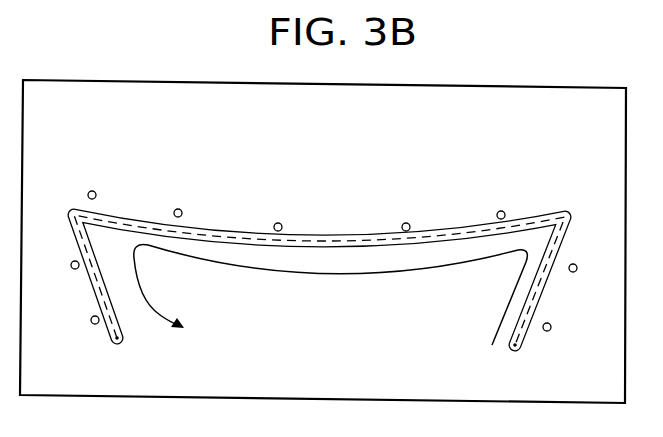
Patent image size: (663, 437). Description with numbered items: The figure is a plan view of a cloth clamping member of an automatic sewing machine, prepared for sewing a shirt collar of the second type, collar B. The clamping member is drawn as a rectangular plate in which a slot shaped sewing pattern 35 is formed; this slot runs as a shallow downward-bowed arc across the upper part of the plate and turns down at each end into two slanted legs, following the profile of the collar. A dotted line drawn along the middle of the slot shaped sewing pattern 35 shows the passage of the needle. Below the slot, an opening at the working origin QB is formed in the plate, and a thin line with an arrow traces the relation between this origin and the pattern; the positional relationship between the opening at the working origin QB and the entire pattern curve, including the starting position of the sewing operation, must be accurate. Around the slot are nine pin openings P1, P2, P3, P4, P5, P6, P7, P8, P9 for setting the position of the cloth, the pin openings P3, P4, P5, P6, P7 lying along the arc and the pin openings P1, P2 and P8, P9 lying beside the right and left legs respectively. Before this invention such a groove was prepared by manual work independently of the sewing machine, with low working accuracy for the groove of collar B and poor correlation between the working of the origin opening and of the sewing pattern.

The collar B is at (558, 87).
The slot shaped sewing pattern 35 is at (552, 298).
The opening at the working origin QB is at (432, 327).
The pin opening P1 is at (548, 331).
The pin opening P2 is at (577, 265).
The pin opening P3 is at (500, 211).
The pin opening P4 is at (407, 223).
The pin opening P5 is at (279, 223).
The pin opening P6 is at (180, 209).
The pin opening P7 is at (92, 191).
The pin opening P8 is at (73, 269).
The pin opening P9 is at (93, 324).